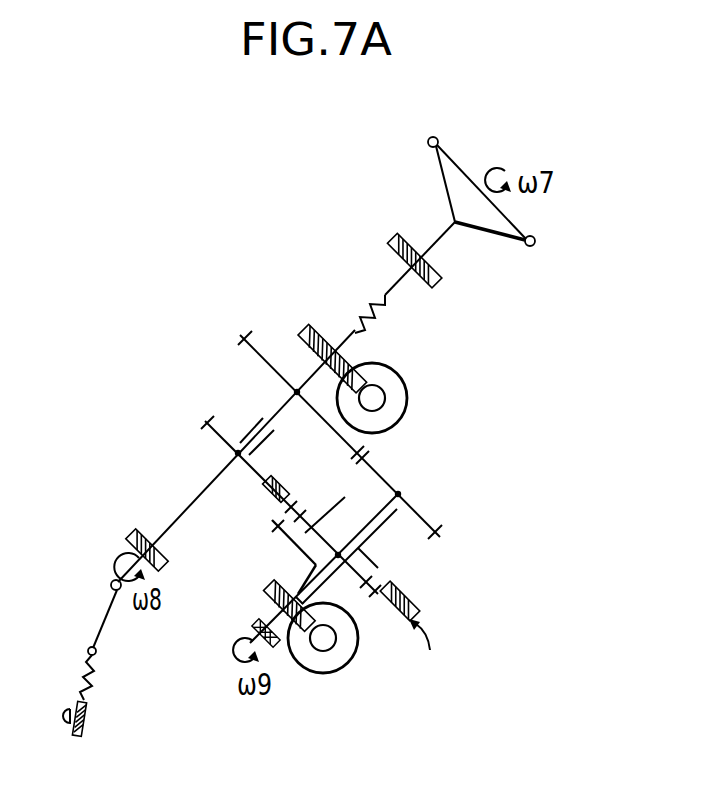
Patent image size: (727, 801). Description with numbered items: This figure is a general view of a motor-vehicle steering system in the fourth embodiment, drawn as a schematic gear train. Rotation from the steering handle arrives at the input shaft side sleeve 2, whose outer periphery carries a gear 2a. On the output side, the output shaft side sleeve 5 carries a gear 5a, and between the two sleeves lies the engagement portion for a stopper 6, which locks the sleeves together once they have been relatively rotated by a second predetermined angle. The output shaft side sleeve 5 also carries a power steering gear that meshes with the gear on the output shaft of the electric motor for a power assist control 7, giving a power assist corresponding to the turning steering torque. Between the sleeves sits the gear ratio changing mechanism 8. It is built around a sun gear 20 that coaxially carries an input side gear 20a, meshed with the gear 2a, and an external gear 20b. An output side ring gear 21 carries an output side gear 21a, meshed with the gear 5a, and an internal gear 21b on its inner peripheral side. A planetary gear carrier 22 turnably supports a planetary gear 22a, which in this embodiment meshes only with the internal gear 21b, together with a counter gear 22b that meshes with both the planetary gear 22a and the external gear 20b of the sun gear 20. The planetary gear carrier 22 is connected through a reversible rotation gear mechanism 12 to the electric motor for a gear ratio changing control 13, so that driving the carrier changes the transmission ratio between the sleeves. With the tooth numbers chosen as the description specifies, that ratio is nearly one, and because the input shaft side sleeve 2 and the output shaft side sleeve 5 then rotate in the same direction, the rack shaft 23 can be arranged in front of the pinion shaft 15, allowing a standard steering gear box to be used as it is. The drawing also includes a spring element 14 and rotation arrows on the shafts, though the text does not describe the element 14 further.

The input shaft side sleeve 2 is at (336, 346).
The gear 2a is at (243, 330).
The output shaft side sleeve 5 is at (196, 502).
The gear 5a is at (206, 420).
The stopper 6 is at (248, 436).
The electric motor for a power assist control 7 is at (408, 396).
The gear ratio changing mechanism 8 is at (425, 651).
The reversible rotation gear mechanism 12 is at (262, 597).
The electric motor for a gear ratio changing control 13 is at (327, 674).
The spring 14 is at (368, 318).
The pinion shaft 15 is at (90, 722).
The sun gear 20 is at (424, 520).
The input side gear 20a is at (438, 532).
The external gear 20b is at (386, 582).
The output side ring gear 21 is at (372, 563).
The output side gear 21a is at (267, 494).
The internal gear 21b is at (279, 481).
The planetary gear carrier 22 is at (368, 625).
The planetary gear 22a is at (270, 520).
The counter gear 22b is at (336, 508).
The rack shaft 23 is at (63, 712).